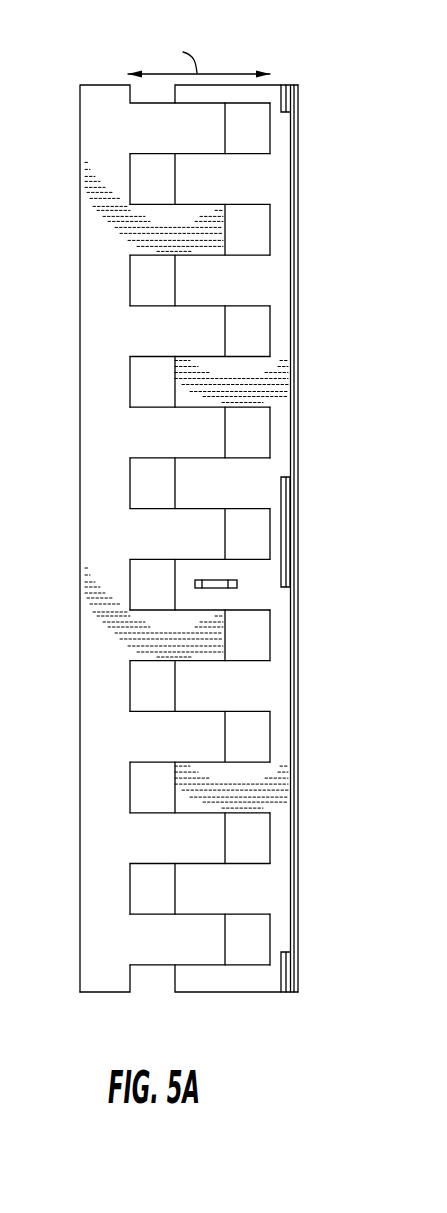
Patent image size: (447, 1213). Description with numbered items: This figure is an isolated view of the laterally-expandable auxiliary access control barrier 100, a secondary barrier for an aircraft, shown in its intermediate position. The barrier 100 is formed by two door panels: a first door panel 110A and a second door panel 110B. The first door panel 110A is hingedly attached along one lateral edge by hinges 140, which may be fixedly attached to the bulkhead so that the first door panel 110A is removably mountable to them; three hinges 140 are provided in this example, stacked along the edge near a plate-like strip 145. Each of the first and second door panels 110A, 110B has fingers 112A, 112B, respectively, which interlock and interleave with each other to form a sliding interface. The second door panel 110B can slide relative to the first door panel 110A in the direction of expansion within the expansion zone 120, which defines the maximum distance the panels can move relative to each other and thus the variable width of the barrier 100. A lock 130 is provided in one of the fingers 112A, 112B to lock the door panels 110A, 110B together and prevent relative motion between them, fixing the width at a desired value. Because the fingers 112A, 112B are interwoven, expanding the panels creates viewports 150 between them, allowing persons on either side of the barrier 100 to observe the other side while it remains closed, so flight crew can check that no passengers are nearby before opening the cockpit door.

The auxiliary access control barrier 100 is at (287, 60).
The first door panel 110A is at (268, 272).
The second door panel 110B is at (92, 178).
The fingers of first door panel 112A is at (200, 683).
The fingers of second door panel 112B is at (205, 743).
The expansion zone 120 is at (178, 997).
The lock 130 is at (238, 584).
The hinges 140 is at (299, 92).
The plate 145 is at (300, 378).
The viewports 150 is at (252, 142).